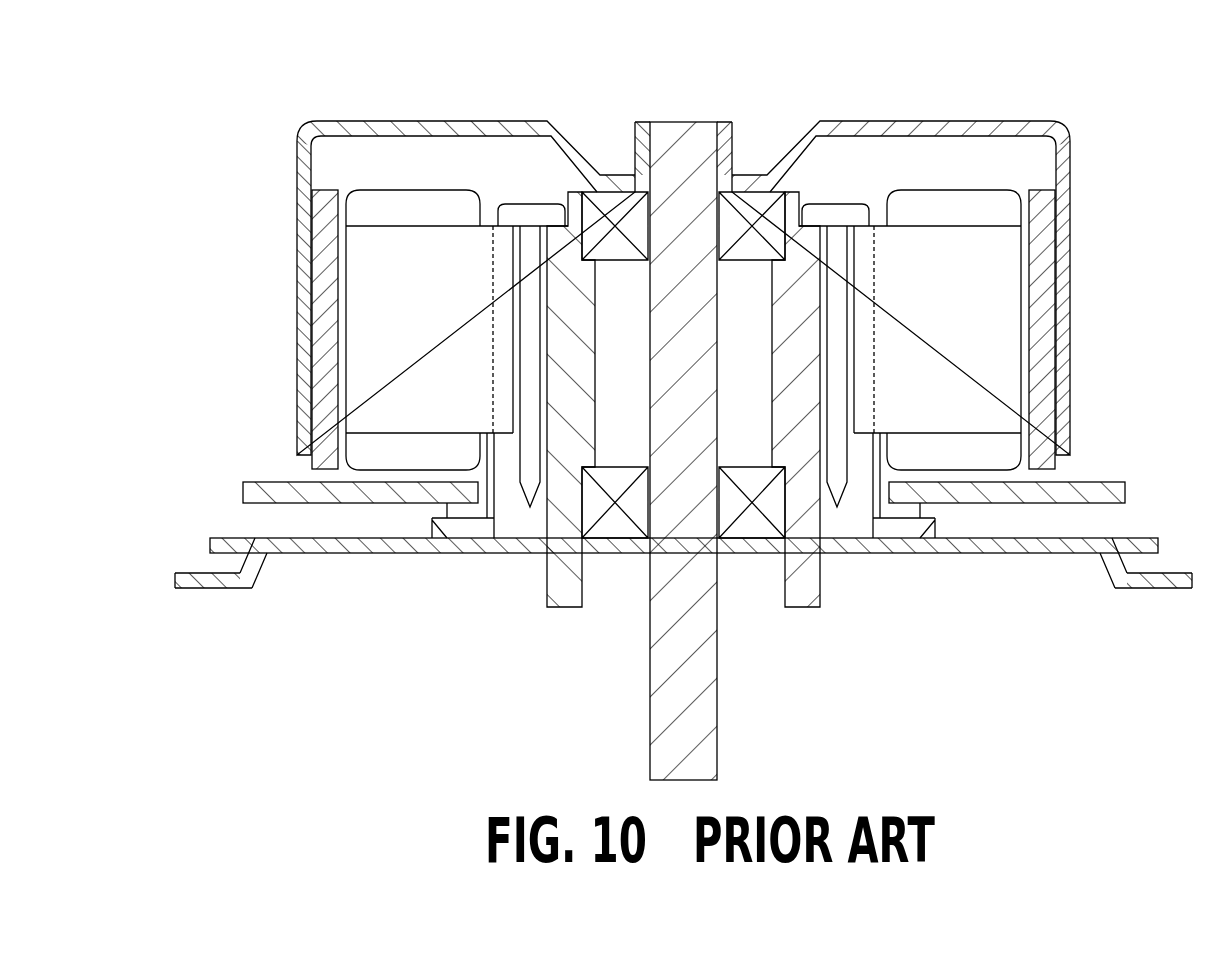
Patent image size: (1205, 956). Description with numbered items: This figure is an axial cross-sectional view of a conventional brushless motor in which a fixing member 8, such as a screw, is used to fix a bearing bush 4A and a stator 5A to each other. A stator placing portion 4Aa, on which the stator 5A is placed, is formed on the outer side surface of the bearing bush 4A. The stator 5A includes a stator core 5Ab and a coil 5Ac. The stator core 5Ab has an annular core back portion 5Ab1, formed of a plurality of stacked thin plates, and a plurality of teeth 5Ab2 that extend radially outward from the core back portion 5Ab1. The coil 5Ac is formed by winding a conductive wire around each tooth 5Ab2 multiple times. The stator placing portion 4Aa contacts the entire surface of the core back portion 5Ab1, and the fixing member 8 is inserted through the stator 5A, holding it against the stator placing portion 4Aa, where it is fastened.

The stator 5A is at (975, 185).
The stator core 5Ab is at (487, 500).
The core back portion 5Ab1 is at (510, 268).
The teeth 5Ab2 is at (385, 282).
The coil 5Ac is at (393, 445).
The fixing member 8 is at (527, 218).
The bearing bush 4A is at (562, 583).
The stator placing portion 4Aa is at (859, 435).